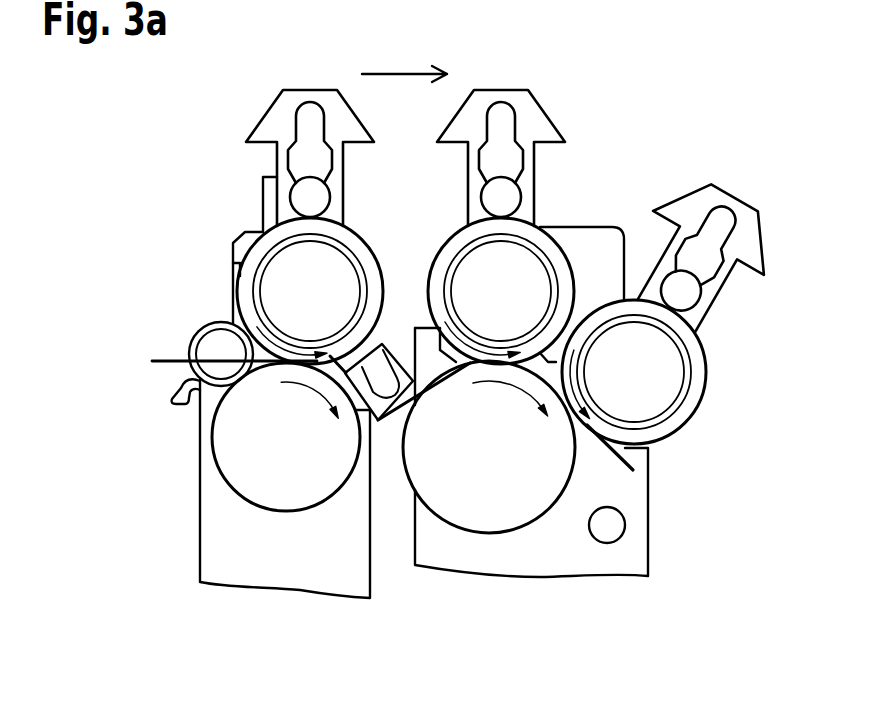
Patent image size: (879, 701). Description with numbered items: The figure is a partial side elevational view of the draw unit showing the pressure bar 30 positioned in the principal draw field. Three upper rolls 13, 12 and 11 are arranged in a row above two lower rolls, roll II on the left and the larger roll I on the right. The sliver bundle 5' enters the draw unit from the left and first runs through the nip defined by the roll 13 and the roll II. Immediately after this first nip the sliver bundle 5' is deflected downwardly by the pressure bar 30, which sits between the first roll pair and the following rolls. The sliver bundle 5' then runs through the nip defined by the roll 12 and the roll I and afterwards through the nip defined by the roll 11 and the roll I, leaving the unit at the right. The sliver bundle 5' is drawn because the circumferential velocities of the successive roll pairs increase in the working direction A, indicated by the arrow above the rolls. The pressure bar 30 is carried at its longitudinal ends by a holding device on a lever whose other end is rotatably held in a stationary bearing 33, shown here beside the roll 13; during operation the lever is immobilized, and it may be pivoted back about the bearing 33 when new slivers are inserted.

The roll 13 is at (303, 285).
The roll 12 is at (513, 272).
The roll 11 is at (638, 372).
The pressure bar 30 is at (380, 372).
The stationary bearing 33 is at (221, 351).
The sliver bundle 5' is at (415, 433).
The roll II is at (268, 448).
The roll I is at (508, 477).
The working direction A is at (390, 72).